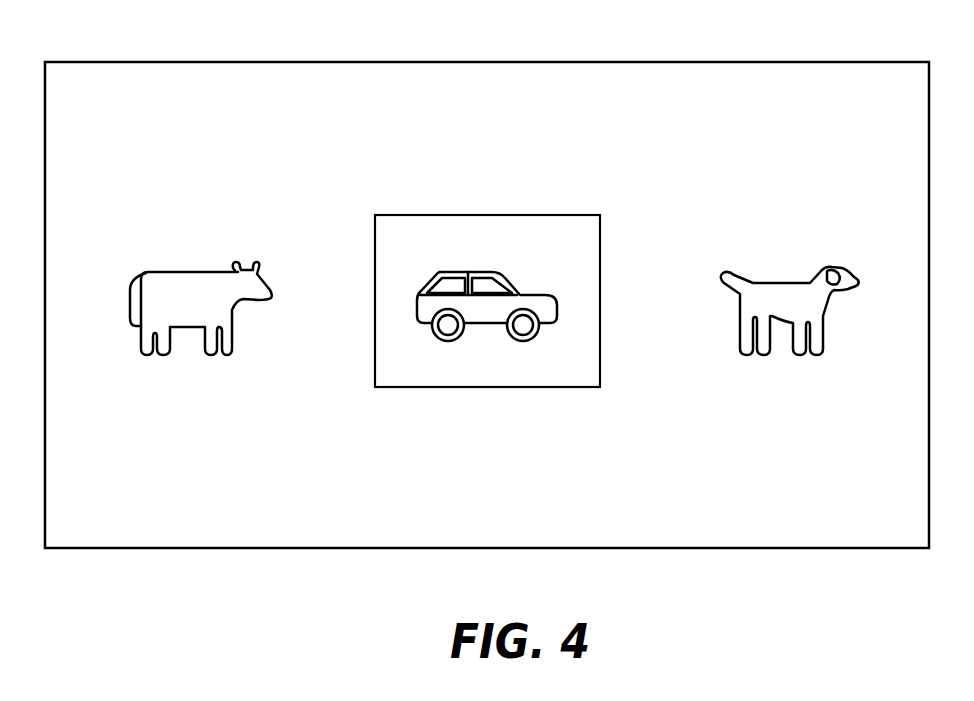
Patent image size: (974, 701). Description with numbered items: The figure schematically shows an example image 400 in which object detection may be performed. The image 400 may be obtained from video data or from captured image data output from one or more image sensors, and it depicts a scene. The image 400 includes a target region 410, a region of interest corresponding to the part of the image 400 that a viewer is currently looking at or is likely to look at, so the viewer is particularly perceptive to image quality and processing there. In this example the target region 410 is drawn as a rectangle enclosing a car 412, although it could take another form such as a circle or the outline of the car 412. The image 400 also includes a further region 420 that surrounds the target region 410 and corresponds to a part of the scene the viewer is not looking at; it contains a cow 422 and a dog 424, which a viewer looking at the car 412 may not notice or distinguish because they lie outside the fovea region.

The image 400 is at (168, 62).
The further region 420 is at (508, 108).
The target region 410 is at (374, 268).
The car 412 is at (472, 270).
The cow 422 is at (188, 272).
The dog 424 is at (780, 282).